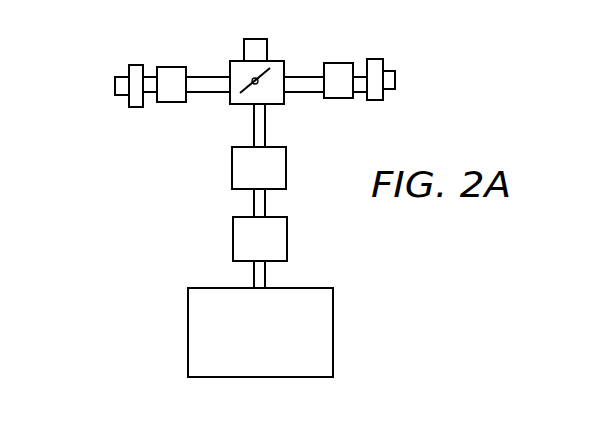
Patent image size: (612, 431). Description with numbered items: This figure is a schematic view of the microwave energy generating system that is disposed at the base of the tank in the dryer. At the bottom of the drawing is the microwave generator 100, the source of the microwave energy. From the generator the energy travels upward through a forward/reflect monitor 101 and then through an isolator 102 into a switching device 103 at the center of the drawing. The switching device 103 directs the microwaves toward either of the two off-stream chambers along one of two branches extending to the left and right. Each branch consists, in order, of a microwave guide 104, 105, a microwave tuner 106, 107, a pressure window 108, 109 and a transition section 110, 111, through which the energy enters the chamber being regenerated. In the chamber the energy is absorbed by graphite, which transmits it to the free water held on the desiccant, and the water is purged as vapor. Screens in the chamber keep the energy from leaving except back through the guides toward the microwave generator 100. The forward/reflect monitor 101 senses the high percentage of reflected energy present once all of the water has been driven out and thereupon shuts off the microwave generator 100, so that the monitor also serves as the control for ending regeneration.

The microwave generator 100 is at (188, 336).
The forward/reflect monitor 101 is at (287, 230).
The isolator 102 is at (231, 171).
The switching device 103 is at (277, 59).
The microwave guide 104 is at (205, 77).
The microwave guide 105 is at (296, 74).
The microwave tuner 106 is at (165, 65).
The microwave tuner 107 is at (347, 62).
The pressure window 108 is at (134, 64).
The pressure window 109 is at (375, 58).
The transition section 110 is at (121, 96).
The transition section 111 is at (388, 90).